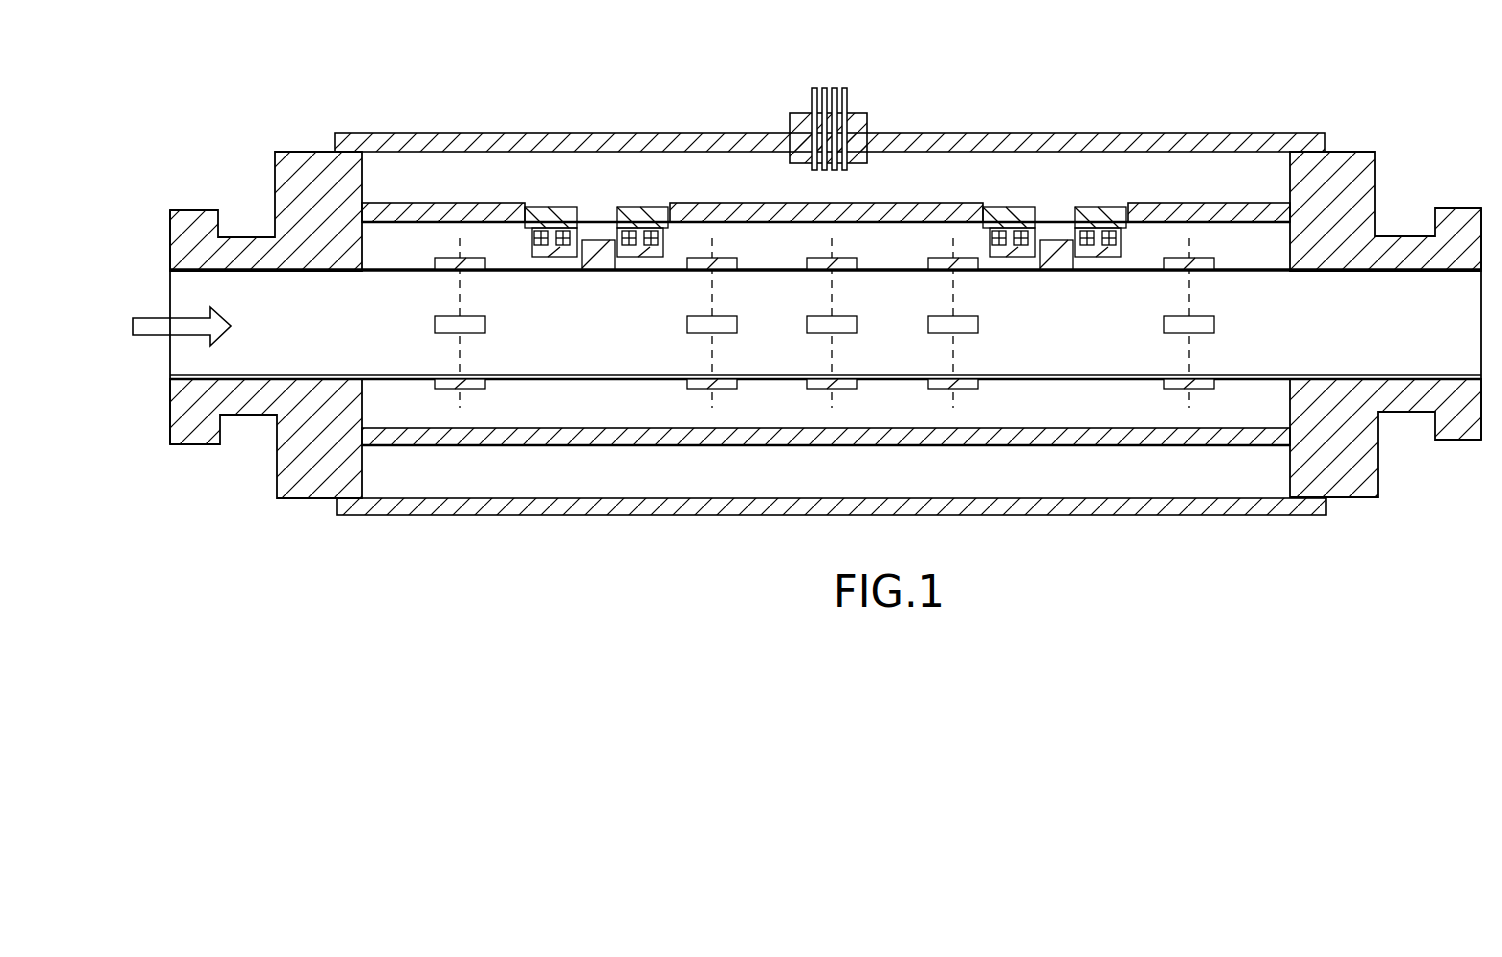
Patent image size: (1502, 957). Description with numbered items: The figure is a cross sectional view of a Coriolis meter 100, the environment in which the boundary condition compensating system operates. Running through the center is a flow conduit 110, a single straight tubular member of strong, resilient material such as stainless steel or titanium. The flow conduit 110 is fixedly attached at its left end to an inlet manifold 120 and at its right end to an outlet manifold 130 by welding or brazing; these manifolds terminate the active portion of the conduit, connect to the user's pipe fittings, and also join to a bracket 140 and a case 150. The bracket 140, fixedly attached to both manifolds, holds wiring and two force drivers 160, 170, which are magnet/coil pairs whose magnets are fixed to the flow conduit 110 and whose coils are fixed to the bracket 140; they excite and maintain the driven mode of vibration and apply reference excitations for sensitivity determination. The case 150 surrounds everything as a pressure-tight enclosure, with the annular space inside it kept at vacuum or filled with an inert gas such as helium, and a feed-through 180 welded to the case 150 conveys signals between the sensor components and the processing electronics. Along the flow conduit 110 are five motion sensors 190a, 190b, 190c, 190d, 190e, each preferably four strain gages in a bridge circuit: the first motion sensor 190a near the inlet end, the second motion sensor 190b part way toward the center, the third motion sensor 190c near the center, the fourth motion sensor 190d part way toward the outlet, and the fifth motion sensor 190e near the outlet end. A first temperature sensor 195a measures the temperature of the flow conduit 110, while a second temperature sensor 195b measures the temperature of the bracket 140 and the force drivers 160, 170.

The Coriolis meter 100 is at (168, 139).
The flow conduit 110 is at (588, 379).
The inlet manifold 120 is at (300, 498).
The outlet manifold 130 is at (1372, 152).
The bracket 140 is at (737, 203).
The case 150 is at (1210, 133).
The force driver 160 is at (590, 203).
The force driver 170 is at (1052, 203).
The feed-through 180 is at (867, 125).
The first motion sensor 190a is at (470, 390).
The second motion sensor 190b is at (720, 389).
The third motion sensor 190c is at (840, 389).
The fourth motion sensor 190d is at (962, 389).
The fifth motion sensor 190e is at (1197, 389).
The first temperature sensor 195a is at (427, 257).
The second temperature sensor 195b is at (427, 190).